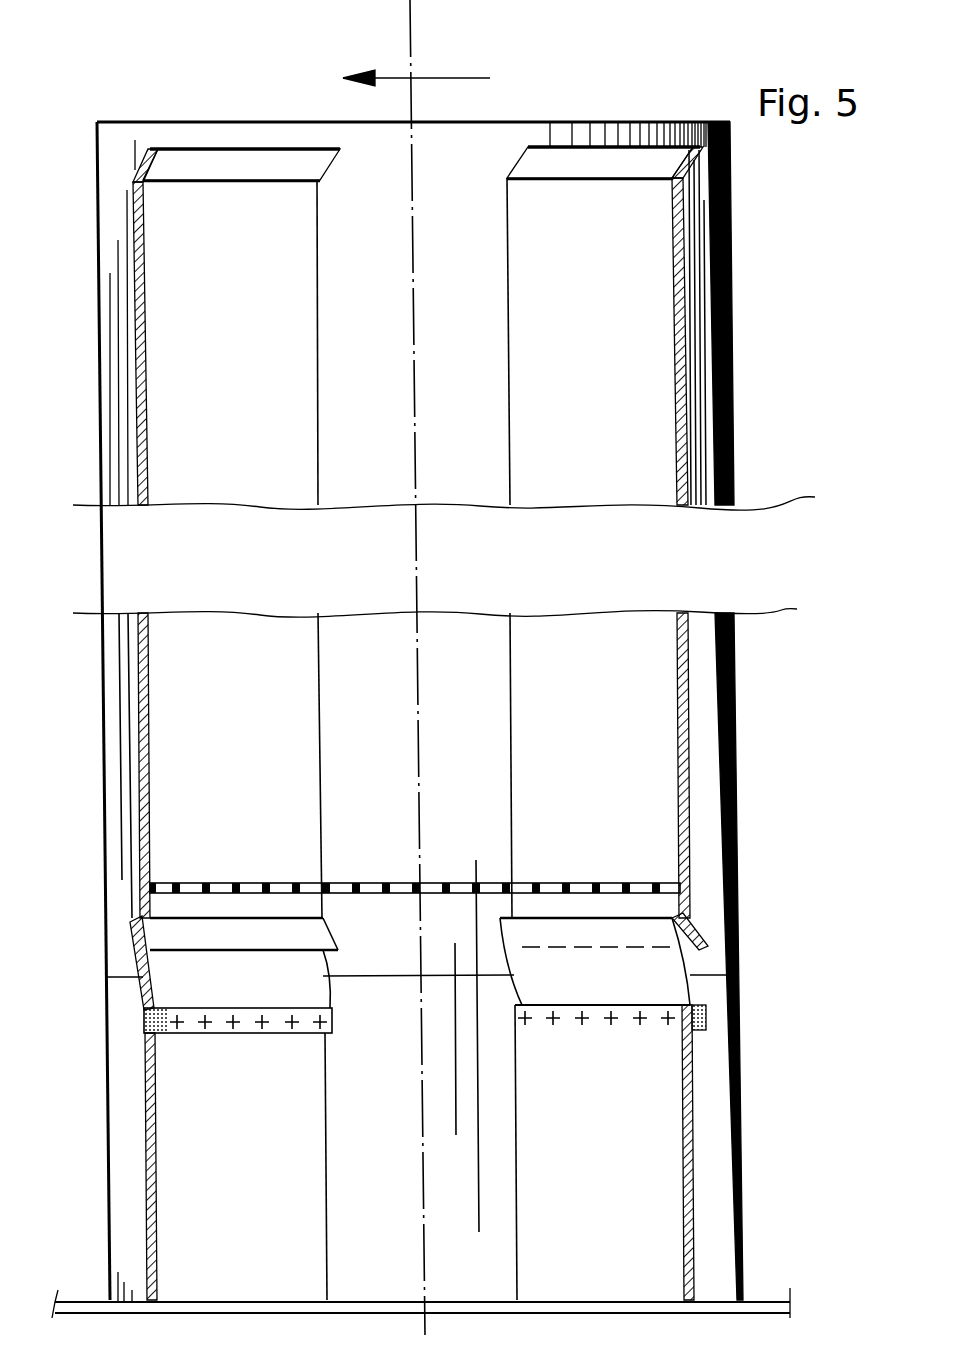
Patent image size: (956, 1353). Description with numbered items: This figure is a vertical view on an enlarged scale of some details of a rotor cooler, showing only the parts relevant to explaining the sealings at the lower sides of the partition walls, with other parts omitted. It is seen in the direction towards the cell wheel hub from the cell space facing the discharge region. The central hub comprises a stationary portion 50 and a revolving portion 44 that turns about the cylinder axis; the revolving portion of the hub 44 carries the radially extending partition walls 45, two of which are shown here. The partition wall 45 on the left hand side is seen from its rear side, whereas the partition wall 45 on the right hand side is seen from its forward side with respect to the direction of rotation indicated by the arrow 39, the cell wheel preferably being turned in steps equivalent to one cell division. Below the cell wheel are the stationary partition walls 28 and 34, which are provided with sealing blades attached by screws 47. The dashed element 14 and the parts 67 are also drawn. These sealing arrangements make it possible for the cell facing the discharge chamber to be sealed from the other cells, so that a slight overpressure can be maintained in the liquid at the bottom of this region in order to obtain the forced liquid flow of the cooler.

The sealing strip 14 is at (655, 881).
The stationary partition wall 28 is at (256, 1270).
The stationary partition wall 34 is at (613, 1270).
The arrow 39 is at (425, 78).
The revolving portion of the hub 44 is at (371, 285).
The partition walls 45 is at (228, 435).
The screws 47 is at (182, 1030).
The stationary portion of the hub 50 is at (383, 1125).
The holding strips 67 is at (190, 988).